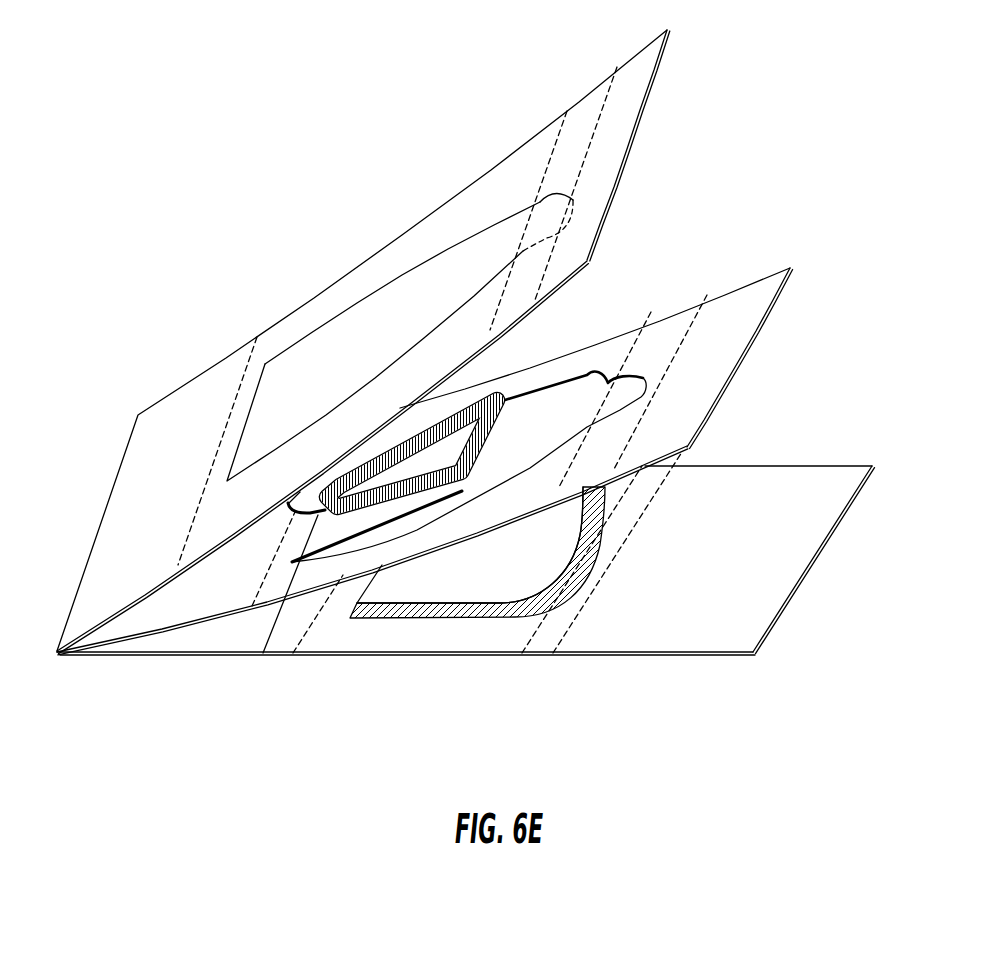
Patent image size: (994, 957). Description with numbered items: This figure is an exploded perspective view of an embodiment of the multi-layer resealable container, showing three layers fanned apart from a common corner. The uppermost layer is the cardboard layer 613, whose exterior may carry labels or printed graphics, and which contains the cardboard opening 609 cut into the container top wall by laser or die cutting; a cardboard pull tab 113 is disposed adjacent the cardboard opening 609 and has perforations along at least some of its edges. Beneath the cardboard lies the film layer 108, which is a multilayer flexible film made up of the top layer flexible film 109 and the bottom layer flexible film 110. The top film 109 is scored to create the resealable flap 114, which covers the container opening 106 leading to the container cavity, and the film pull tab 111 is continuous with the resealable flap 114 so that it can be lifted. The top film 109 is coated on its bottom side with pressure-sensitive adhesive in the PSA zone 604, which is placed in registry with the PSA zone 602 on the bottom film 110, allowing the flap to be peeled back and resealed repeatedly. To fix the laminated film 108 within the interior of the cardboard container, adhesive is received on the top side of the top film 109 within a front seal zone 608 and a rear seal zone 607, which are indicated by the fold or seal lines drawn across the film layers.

The container opening 106 is at (440, 578).
The film layer 108 is at (737, 370).
The top layer flexible film 109 is at (735, 338).
The bottom layer flexible film 110 is at (803, 553).
The film pull tab 111 is at (290, 510).
The cardboard pull tab 113 is at (555, 205).
The resealable flap 114 is at (448, 442).
The PSA zone of bottom film 602 is at (400, 605).
The PSA zone of top film 604 is at (263, 653).
The rear seal zone 607 is at (322, 640).
The front seal zone 608 is at (542, 645).
The cardboard opening 609 is at (413, 287).
The cardboard layer 613 is at (613, 153).